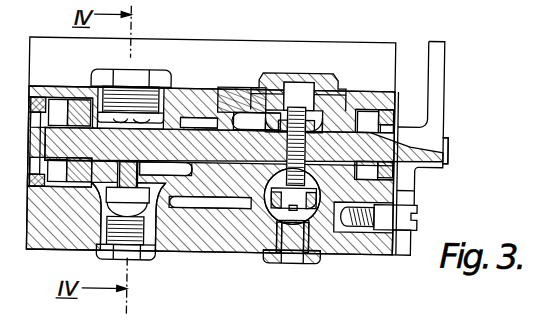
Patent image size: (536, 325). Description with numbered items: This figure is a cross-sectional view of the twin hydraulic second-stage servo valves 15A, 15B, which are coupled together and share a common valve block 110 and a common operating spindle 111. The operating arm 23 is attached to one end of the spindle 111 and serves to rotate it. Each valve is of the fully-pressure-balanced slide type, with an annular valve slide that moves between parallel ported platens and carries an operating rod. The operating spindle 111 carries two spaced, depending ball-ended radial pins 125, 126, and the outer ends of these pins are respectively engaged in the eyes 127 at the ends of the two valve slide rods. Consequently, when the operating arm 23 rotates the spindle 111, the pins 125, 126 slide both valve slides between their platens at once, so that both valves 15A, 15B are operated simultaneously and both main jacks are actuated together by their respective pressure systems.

The valve block 110 is at (236, 62).
The operating spindle 111 is at (194, 104).
The ball-ended radial pin 125 is at (338, 103).
The operating arm 23 is at (437, 61).
The second-stage servo valve 15A is at (94, 212).
The second-stage servo valve 15B is at (265, 218).
The ball-ended radial pin 126 is at (92, 193).
The eye 127 is at (152, 198).